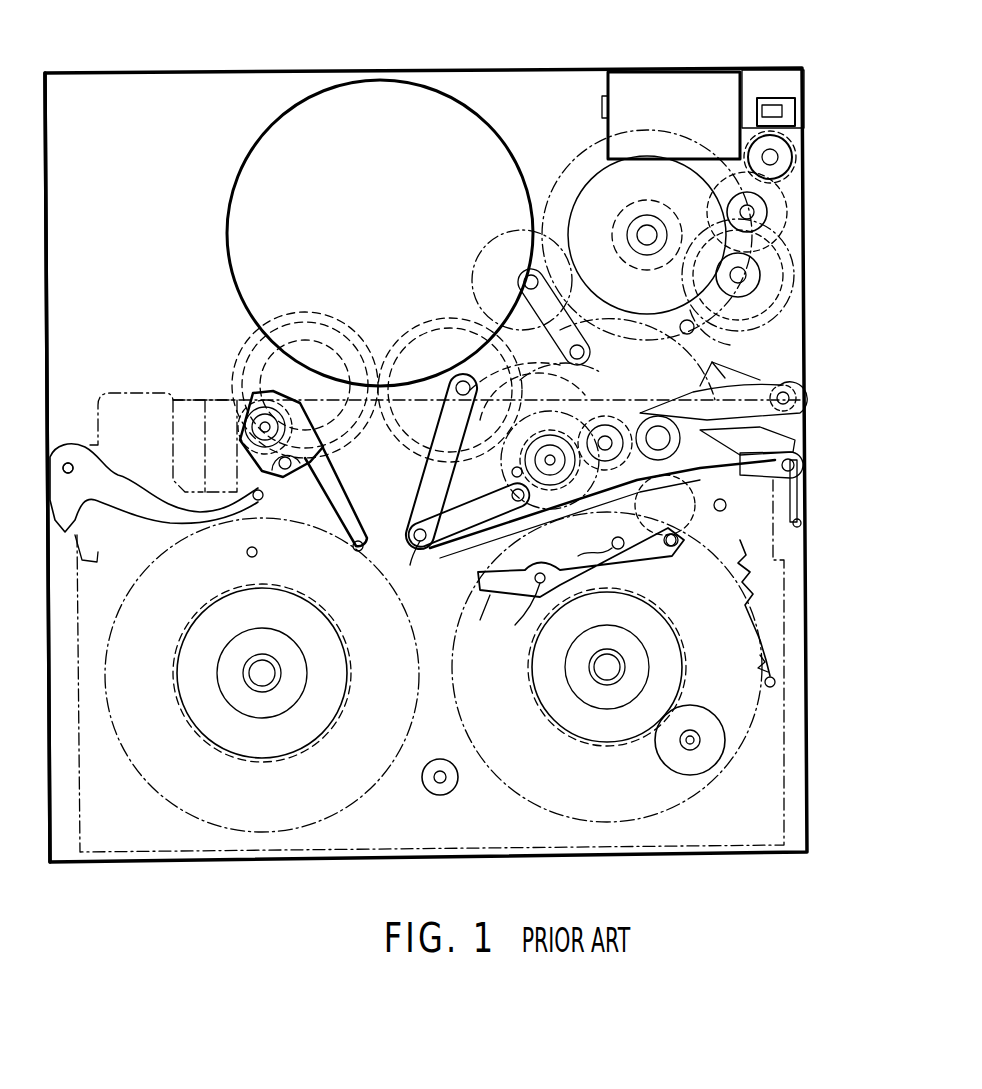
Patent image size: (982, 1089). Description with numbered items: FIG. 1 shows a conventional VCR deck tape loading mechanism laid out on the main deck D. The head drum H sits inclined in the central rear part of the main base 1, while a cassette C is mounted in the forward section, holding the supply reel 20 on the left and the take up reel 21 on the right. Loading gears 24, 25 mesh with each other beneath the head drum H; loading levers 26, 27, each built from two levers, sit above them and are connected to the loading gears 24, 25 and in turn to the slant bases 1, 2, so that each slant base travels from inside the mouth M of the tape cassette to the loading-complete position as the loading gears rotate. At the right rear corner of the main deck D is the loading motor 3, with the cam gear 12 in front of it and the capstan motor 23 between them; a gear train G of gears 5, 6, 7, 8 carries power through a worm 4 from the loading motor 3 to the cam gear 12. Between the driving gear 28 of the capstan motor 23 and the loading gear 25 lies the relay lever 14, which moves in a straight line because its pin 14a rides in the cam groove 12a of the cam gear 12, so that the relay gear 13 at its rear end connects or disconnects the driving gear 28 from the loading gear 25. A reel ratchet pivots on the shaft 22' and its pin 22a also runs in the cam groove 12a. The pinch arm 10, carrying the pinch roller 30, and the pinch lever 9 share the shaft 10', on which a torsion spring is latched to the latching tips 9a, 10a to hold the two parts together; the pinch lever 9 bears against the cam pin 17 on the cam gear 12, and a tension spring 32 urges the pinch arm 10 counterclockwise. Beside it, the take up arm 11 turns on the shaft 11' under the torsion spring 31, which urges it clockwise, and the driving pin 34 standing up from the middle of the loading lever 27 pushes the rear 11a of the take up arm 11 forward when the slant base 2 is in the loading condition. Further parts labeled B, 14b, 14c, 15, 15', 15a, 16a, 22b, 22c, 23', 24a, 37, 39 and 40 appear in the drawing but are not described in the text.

The base plate B is at (82, 83).
The main deck D is at (47, 218).
The cassette C is at (78, 748).
The mouth of tape cassette M is at (200, 482).
The head drum H is at (318, 95).
The gear train G is at (790, 242).
The main base 1 is at (248, 402).
The slant base 2 is at (525, 454).
The loading motor 3 is at (690, 80).
The worm 4 is at (795, 108).
The gear a 5 is at (780, 157).
The gear b 6 is at (782, 212).
The gear c 7 is at (760, 284).
The gear d 8 is at (745, 344).
The pinch lever 9 is at (800, 442).
The latching tip of pinch lever 9a is at (650, 414).
The pinch arm 10 is at (747, 400).
The shaft 10' is at (776, 367).
The latching tip of pinch arm 10a is at (760, 374).
The take up arm 11 is at (639, 514).
The shaft 11' is at (798, 461).
The rear of take up arm 11a is at (495, 547).
The cam gear 12 is at (754, 606).
The cam groove 12a is at (645, 514).
The relay gear 13 is at (510, 242).
The relay lever 14 is at (555, 290).
The pin 14a is at (580, 382).
The lever portion 14b is at (590, 330).
The lever portion 14c is at (552, 398).
The lever 15 is at (156, 484).
The lever pivot 15' is at (71, 430).
The lever tab 15a is at (95, 557).
The gear 16a is at (325, 377).
The cam pin 17 is at (590, 554).
The supply reel 20 is at (278, 760).
The take up reel 21 is at (585, 727).
The pin 22a is at (676, 575).
The lever end 22b is at (485, 623).
The lever portion 22c is at (590, 613).
The shaft 22' is at (514, 629).
The capstan motor 23 is at (609, 209).
The gear hub 23' is at (647, 216).
The loading gear 24 is at (273, 320).
The gear 24a is at (262, 337).
The loading gear 25 is at (450, 332).
The loading lever 26 is at (352, 480).
The loading lever 27 is at (418, 502).
The driving gear 28 is at (592, 182).
The pinch roller 30 is at (550, 447).
The torsion spring 31 is at (722, 335).
The tension spring 32 is at (766, 662).
The driving pin 34 is at (405, 571).
The hub 37 is at (262, 485).
The stopper 39 is at (800, 507).
The cam 40 is at (555, 364).